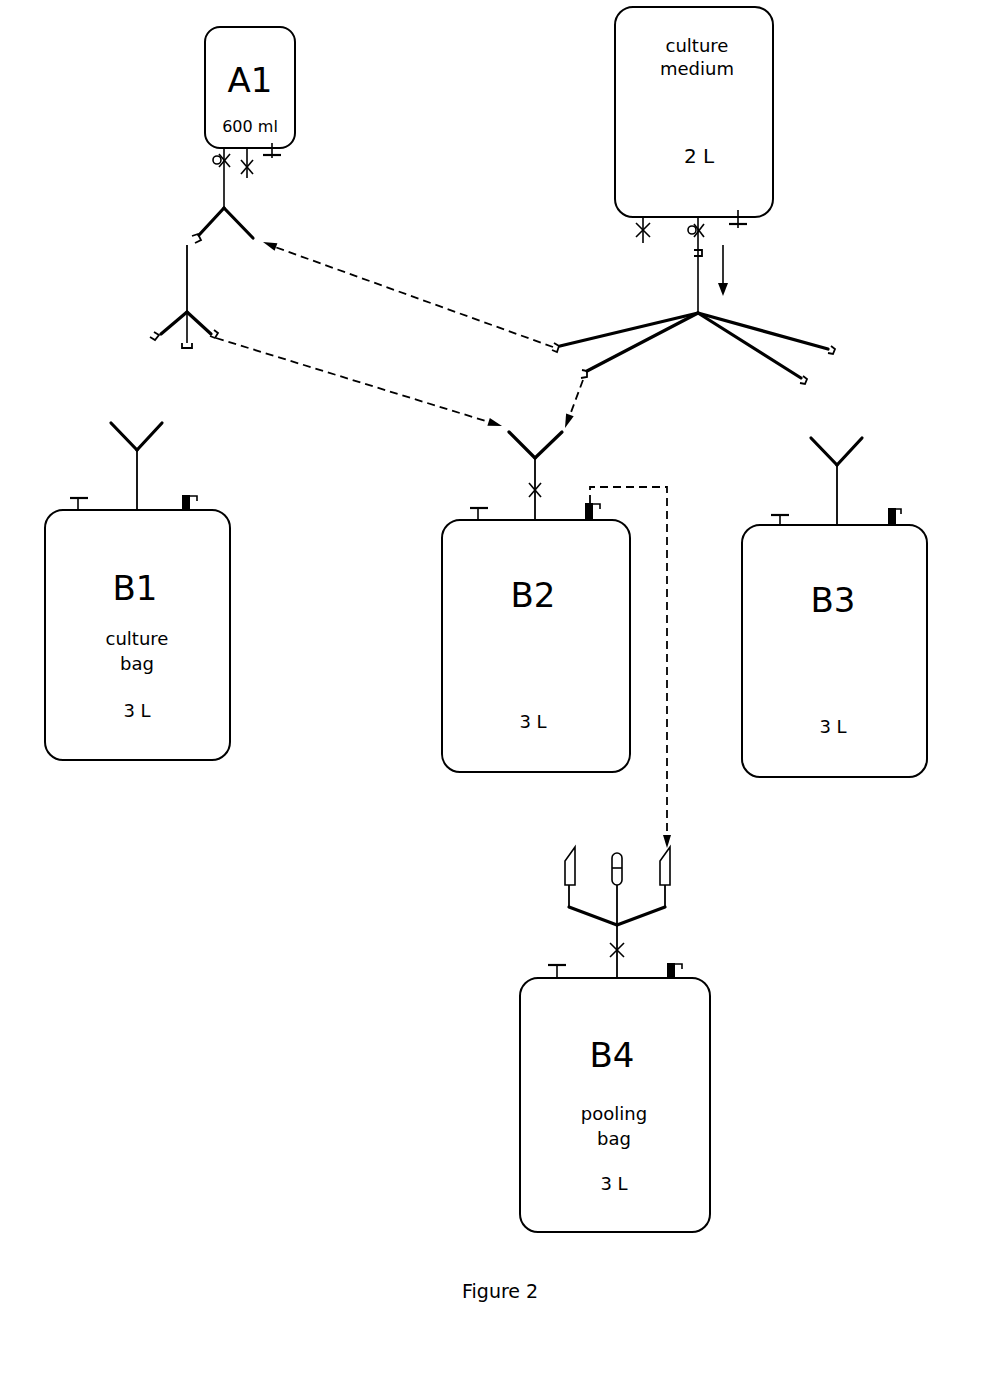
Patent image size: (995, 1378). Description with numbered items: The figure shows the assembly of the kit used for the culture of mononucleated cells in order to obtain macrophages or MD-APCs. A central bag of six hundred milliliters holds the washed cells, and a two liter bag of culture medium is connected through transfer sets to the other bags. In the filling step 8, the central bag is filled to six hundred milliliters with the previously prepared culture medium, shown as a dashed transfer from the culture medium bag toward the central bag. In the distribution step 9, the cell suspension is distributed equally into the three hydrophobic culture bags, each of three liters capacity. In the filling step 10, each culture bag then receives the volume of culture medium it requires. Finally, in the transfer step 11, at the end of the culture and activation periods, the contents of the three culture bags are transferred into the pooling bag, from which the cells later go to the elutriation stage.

The filling step with culture medium 8 is at (408, 294).
The distribution step into culture bags 9 is at (359, 382).
The filling step of culture bags with culture medium 10 is at (600, 404).
The transfer step into pooling bag 11 is at (659, 667).